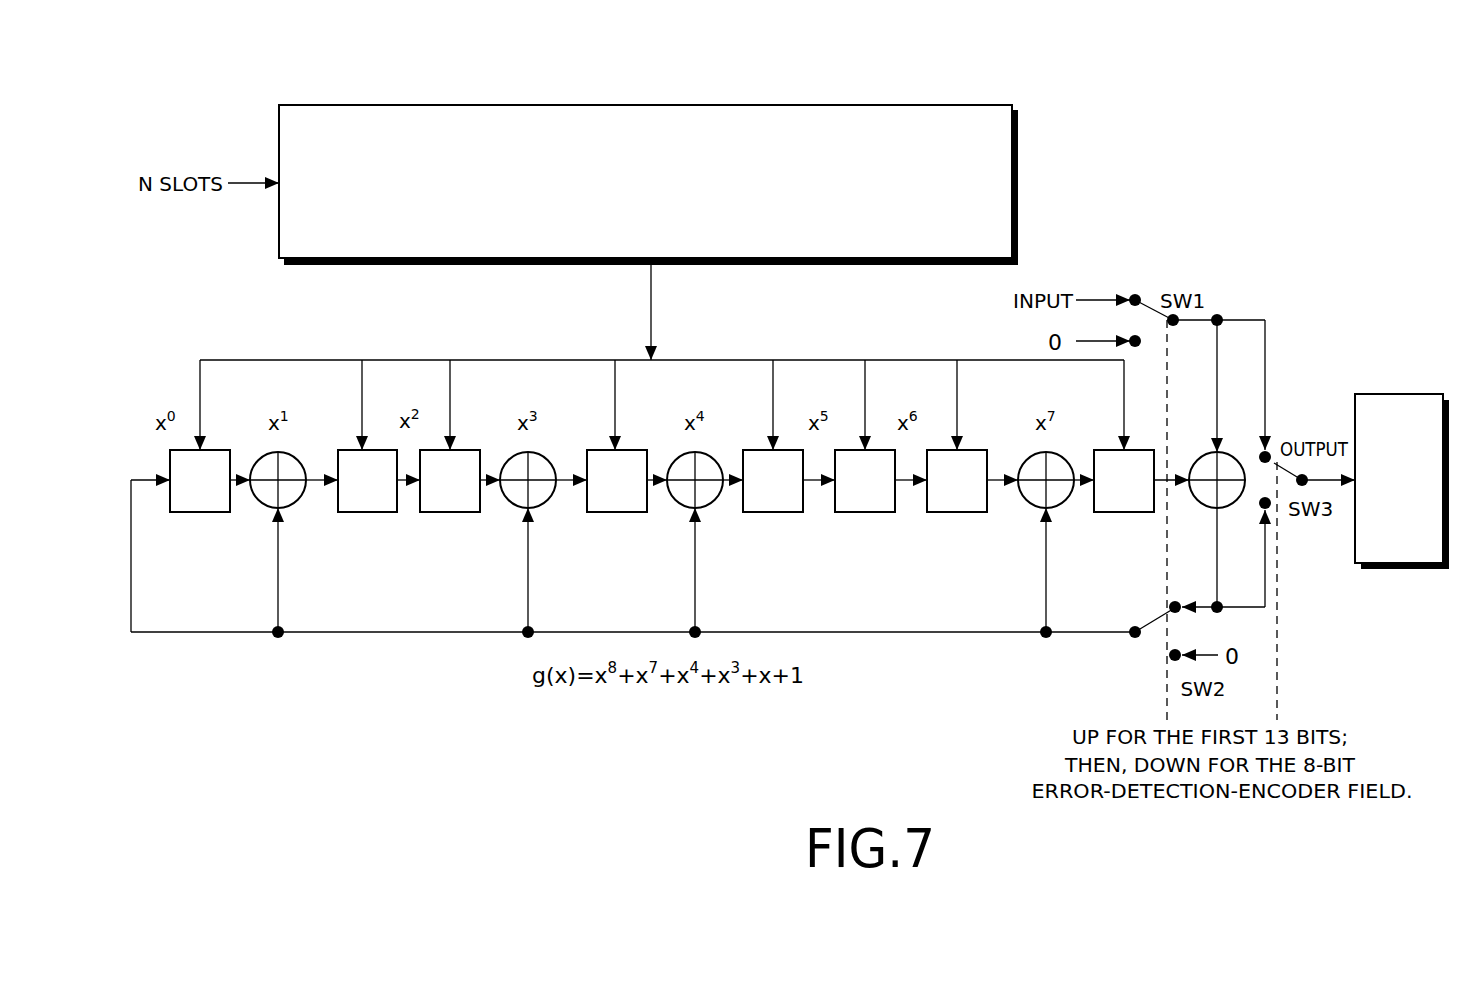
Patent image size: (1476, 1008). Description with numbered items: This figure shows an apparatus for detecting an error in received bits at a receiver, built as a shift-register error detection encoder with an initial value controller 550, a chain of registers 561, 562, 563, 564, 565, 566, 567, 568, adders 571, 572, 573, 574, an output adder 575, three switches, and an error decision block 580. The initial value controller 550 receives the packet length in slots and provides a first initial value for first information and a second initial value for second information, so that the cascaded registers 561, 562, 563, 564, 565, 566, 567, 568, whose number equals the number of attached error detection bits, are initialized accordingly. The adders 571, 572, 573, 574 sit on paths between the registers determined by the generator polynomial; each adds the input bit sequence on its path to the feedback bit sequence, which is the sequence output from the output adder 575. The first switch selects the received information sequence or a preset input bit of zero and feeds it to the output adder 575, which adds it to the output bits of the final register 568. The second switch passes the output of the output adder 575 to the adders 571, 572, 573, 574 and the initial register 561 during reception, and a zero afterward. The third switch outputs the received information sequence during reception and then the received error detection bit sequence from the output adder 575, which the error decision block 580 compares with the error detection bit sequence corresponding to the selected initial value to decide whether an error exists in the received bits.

The initial value controller 550 is at (648, 105).
The register 561 is at (200, 512).
The register 562 is at (368, 512).
The register 563 is at (450, 512).
The register 564 is at (617, 512).
The register 565 is at (773, 512).
The register 566 is at (865, 512).
The register 567 is at (957, 512).
The final register 568 is at (1124, 512).
The adder 571 is at (298, 500).
The adder 572 is at (548, 500).
The adder 573 is at (715, 500).
The adder 574 is at (1066, 500).
The output adder 575 is at (1234, 502).
The error decision block 580 is at (1401, 394).